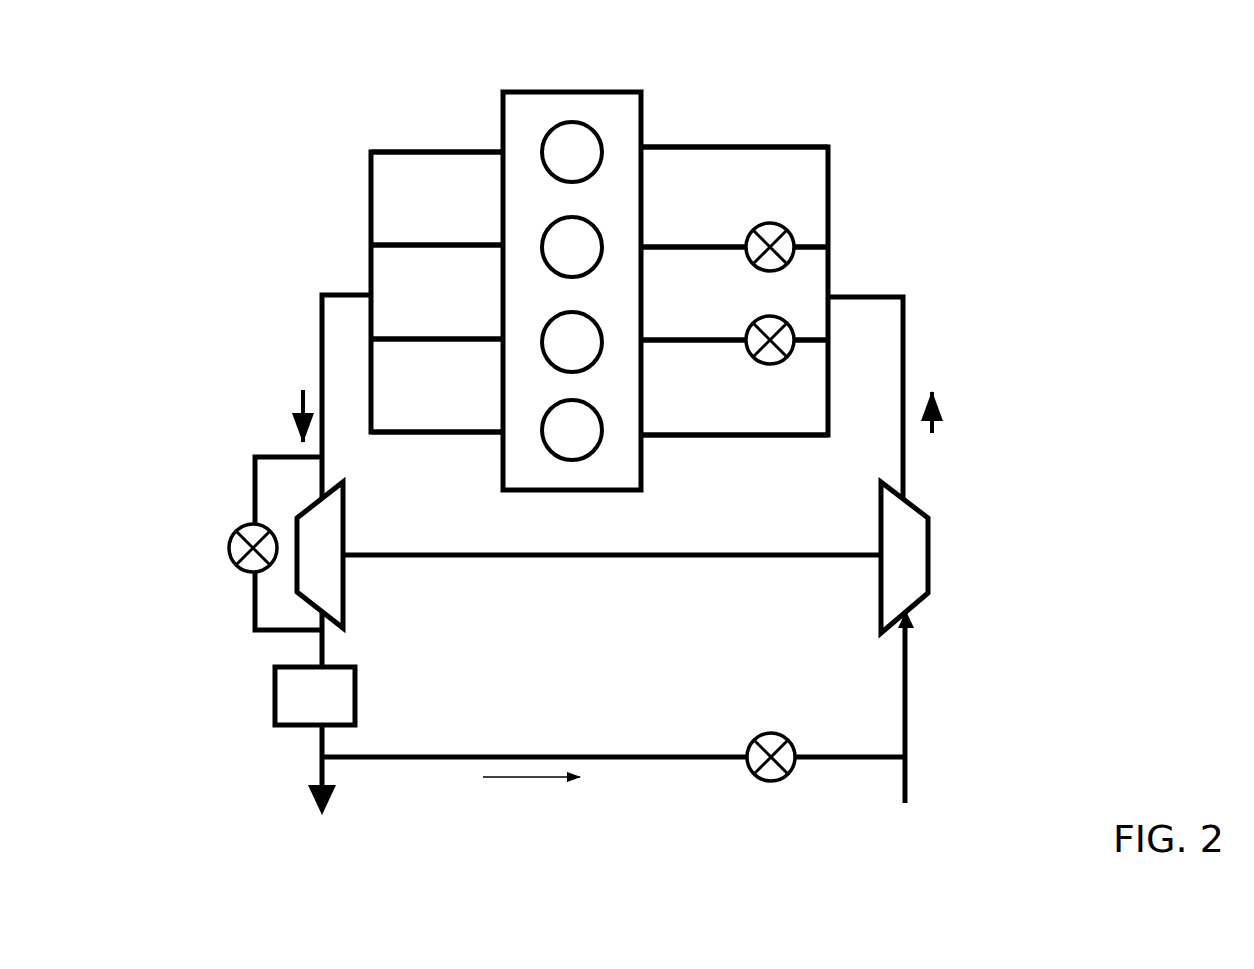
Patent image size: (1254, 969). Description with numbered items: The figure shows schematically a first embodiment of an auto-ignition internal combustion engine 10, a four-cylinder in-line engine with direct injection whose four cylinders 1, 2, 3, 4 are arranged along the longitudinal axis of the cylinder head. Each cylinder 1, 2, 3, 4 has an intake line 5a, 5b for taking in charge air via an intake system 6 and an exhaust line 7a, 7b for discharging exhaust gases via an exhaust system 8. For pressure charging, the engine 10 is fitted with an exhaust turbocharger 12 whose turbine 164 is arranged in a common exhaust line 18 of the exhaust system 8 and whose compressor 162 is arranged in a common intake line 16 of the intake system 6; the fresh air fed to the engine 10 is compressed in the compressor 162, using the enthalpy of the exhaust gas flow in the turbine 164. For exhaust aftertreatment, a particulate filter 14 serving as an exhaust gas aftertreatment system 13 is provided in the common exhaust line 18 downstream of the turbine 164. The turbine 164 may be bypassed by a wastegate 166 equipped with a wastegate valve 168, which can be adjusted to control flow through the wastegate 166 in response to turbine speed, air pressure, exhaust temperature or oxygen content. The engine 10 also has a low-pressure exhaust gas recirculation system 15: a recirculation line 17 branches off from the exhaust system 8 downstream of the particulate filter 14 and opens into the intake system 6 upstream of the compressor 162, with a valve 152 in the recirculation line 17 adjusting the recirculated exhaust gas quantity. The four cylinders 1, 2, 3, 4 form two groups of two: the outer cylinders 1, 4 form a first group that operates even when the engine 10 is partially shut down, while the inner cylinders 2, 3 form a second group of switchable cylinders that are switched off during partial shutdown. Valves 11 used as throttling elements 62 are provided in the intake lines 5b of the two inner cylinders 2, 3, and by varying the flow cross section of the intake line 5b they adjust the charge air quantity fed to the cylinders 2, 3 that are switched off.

The cylinder 1 is at (572, 152).
The cylinder 2 is at (572, 247).
The cylinder 3 is at (572, 342).
The cylinder 4 is at (572, 430).
The intake line 5a is at (700, 146).
The intake line 5b is at (680, 243).
The intake system 6 is at (990, 310).
The exhaust line 7a is at (452, 150).
The exhaust line 7b is at (462, 245).
The exhaust system 8 is at (290, 217).
The internal combustion engine 10 is at (1058, 143).
The valve 11 is at (784, 308).
The exhaust turbocharger 12 is at (572, 562).
The exhaust gas aftertreatment system 13 is at (262, 713).
The particulate filter 14 is at (296, 706).
The exhaust gas recirculation system 15 is at (600, 800).
The common intake line 16 is at (902, 440).
The recirculation line 17 is at (412, 757).
The common exhaust line 18 is at (320, 374).
The throttling element 62 is at (831, 272).
The EGR valve 152 is at (775, 732).
The compressor 162 is at (918, 592).
The turbine 164 is at (310, 569).
The wastegate 166 is at (253, 478).
The wastegate valve 168 is at (233, 537).